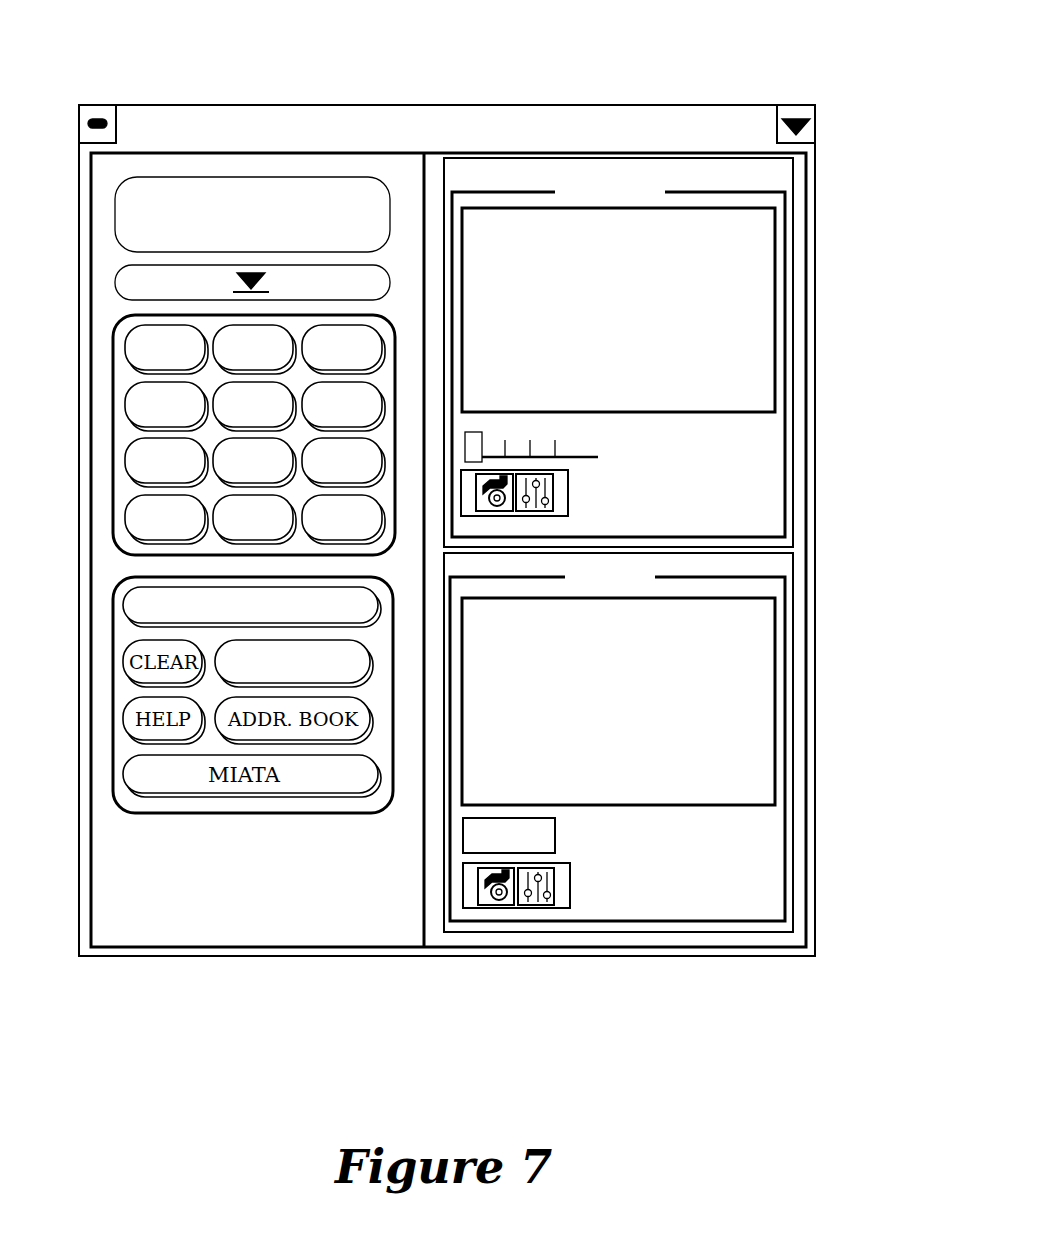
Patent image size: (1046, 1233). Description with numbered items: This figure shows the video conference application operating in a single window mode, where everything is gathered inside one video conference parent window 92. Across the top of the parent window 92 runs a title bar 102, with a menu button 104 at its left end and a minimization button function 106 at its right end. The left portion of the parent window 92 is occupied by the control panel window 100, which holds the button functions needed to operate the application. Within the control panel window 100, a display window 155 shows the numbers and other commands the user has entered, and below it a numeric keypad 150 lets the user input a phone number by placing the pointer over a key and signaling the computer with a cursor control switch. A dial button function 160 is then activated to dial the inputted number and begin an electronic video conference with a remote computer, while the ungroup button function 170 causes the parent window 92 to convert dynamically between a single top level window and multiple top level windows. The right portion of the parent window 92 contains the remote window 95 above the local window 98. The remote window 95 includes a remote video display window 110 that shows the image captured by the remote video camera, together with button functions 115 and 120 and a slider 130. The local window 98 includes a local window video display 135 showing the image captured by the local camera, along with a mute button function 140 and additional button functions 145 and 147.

The control panel window 100 is at (208, 902).
The title bar 102 is at (570, 100).
The menu button 104 is at (98, 105).
The minimization button function 106 is at (800, 105).
The display window 155 is at (182, 232).
The numeric keypad 150 is at (92, 417).
The dial button function 160 is at (145, 610).
The ungroup button function 170 is at (240, 677).
The remote window 95 is at (810, 470).
The remote video display window 110 is at (750, 226).
The slider 130 is at (483, 445).
The button function 115 is at (553, 490).
The button function 120 is at (490, 510).
The video conference parent window 92 is at (823, 737).
The local window 98 is at (806, 897).
The local window video display 135 is at (750, 628).
The mute button function 140 is at (555, 838).
The button function 145 is at (488, 898).
The button function 147 is at (552, 902).